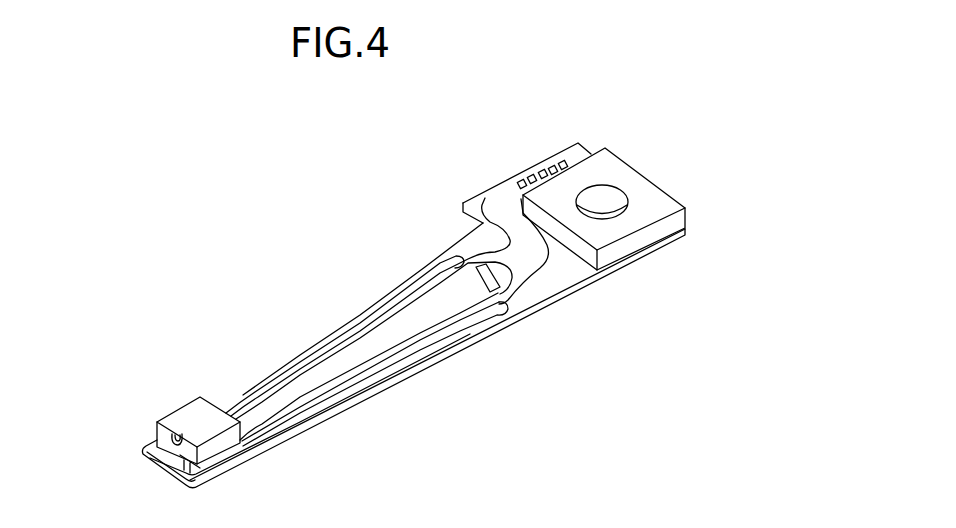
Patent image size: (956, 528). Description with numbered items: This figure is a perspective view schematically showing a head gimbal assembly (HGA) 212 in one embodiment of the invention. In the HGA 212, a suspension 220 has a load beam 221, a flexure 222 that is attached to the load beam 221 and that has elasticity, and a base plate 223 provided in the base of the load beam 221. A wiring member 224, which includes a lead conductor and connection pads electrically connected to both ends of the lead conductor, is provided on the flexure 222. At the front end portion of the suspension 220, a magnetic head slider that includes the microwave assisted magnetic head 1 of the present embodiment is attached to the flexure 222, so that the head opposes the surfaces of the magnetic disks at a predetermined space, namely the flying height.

The microwave assisted magnetic head 1 is at (187, 417).
The head gimbal assembly 212 is at (420, 183).
The suspension 220 is at (410, 276).
The load beam 221 is at (527, 300).
The flexure 222 is at (452, 335).
The base plate 223 is at (628, 227).
The wiring member 224 is at (322, 397).